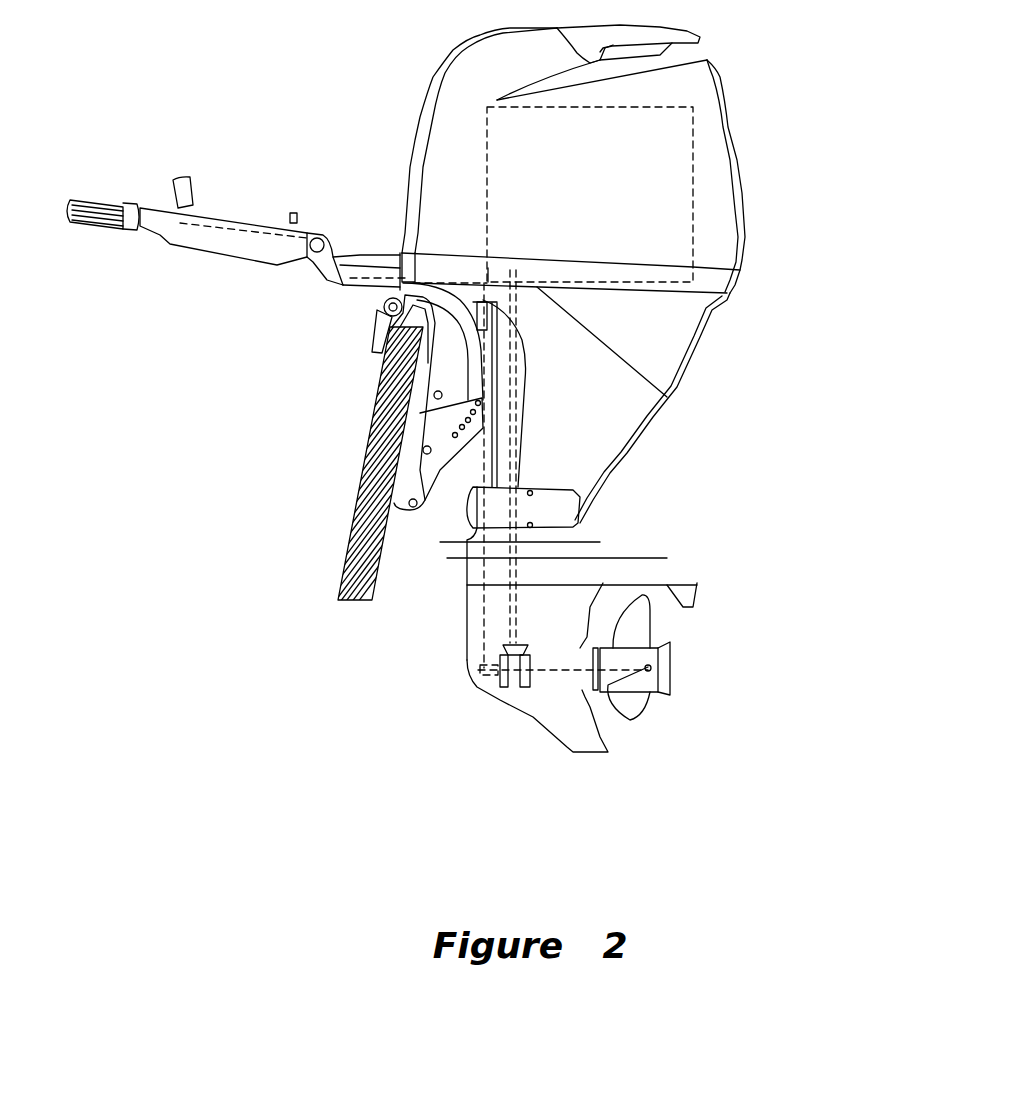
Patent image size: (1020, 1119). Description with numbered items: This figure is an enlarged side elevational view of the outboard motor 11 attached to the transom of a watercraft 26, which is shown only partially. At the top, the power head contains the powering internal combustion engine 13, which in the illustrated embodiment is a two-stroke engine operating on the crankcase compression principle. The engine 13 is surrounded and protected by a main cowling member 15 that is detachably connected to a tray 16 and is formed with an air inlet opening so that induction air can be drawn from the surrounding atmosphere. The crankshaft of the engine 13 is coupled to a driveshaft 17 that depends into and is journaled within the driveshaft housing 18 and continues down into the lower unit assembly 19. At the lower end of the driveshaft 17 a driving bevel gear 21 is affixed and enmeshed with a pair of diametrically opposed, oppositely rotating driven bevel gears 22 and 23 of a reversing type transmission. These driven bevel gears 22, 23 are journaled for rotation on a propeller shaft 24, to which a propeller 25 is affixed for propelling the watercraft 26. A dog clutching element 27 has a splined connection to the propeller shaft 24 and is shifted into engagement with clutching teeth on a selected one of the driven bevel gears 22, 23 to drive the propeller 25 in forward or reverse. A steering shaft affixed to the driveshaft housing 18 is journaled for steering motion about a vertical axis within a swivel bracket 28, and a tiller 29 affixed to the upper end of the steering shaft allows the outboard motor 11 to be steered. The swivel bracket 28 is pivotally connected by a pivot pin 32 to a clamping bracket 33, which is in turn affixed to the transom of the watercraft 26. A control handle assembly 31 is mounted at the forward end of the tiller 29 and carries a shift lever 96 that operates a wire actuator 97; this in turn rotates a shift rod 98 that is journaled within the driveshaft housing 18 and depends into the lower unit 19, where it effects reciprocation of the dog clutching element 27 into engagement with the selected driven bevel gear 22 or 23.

The outboard motor 11 is at (827, 225).
The internal combustion engine 13 is at (657, 190).
The main cowling member 15 is at (712, 117).
The tray 16 is at (720, 282).
The driveshaft 17 is at (518, 385).
The driveshaft housing 18 is at (682, 332).
The lower unit assembly 19 is at (477, 627).
The driving bevel gear 21 is at (527, 640).
The driven bevel gear 22 is at (507, 700).
The driven bevel gear 23 is at (527, 693).
The propeller shaft 24 is at (560, 673).
The propeller 25 is at (642, 623).
The watercraft 26 is at (347, 542).
The dog clutching element 27 is at (553, 507).
The swivel bracket 28 is at (497, 437).
The tiller 29 is at (345, 283).
The control handle assembly 31 is at (148, 200).
The pivot pin 32 is at (377, 323).
The clamping bracket 33 is at (403, 512).
The shift lever 96 is at (178, 177).
The wire actuator 97 is at (170, 243).
The shift rod 98 is at (478, 478).